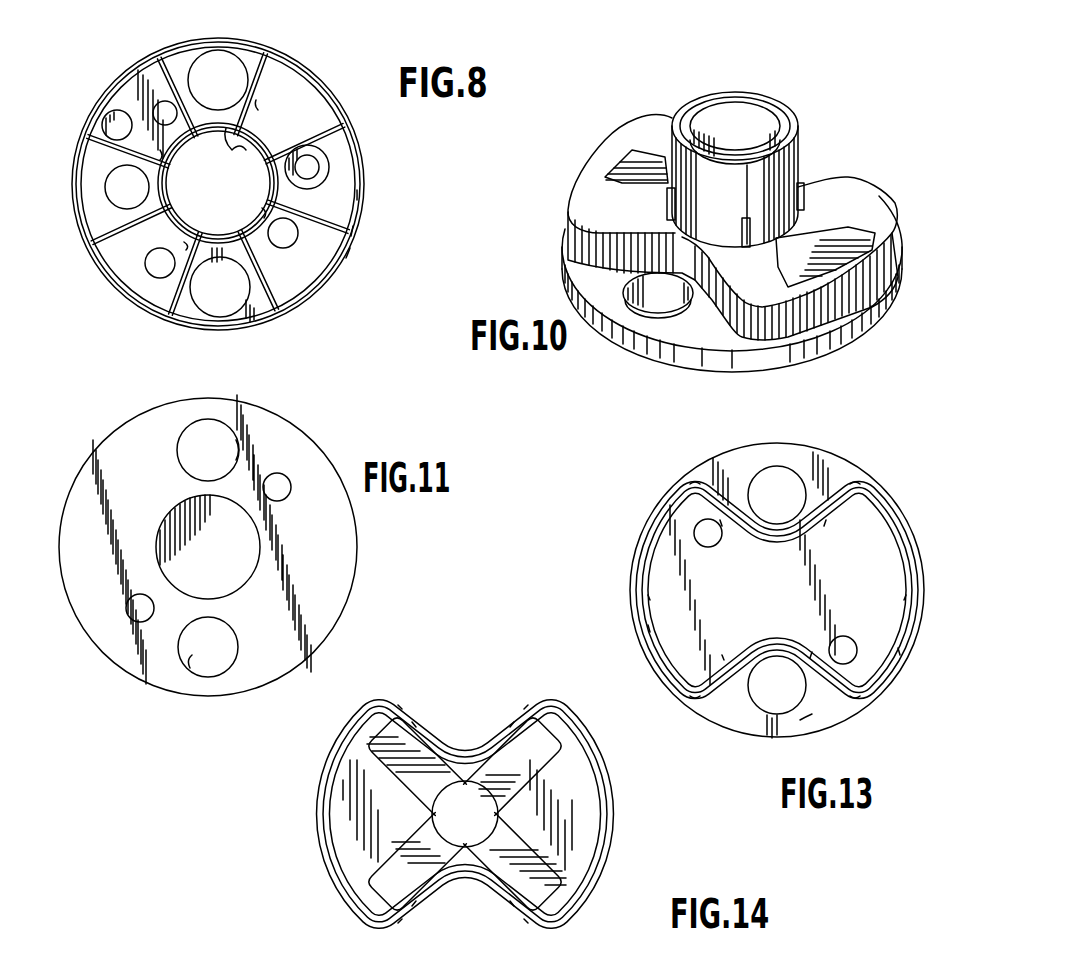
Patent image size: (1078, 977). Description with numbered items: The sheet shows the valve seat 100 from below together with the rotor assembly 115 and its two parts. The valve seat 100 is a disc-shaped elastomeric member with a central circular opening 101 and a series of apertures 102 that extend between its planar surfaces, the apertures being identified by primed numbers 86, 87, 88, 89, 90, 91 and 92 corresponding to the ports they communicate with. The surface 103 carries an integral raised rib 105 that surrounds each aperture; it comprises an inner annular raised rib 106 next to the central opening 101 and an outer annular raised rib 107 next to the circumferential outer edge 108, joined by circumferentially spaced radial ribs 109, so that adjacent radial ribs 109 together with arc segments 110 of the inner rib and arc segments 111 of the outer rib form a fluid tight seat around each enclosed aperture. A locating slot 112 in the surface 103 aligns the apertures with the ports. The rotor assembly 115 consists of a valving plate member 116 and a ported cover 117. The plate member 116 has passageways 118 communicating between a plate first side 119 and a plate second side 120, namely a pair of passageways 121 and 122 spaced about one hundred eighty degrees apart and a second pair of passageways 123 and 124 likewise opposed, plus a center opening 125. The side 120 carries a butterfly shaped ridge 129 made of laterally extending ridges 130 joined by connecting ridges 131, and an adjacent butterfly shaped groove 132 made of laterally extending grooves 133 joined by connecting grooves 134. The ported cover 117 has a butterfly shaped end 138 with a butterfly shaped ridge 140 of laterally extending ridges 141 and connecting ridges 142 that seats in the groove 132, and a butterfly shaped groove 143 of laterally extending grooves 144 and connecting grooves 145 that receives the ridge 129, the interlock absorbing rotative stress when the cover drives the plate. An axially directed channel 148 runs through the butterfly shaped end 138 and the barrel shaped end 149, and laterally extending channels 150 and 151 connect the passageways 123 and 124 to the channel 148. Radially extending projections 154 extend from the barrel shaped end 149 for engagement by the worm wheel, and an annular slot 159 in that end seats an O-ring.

In FIG. 8, the valve seat 100 is at (334, 86).
In FIG. 8, the central circular opening 101 is at (207, 195).
In FIG. 8, the apertures 102 is at (213, 52).
In FIG. 8, the substantially planar surface 103 is at (356, 196).
In FIG. 8, the raised rib 105 is at (362, 156).
In FIG. 8, the inner annular raised rib 106 is at (243, 218).
In FIG. 8, the outer annular raised rib 107 is at (355, 230).
In FIG. 8, the circumferential outer edge 108 is at (350, 254).
In FIG. 8, the radial ribs 109 is at (255, 105).
In FIG. 8, the circumferential arc segments of inner annular rib 110 is at (241, 153).
In FIG. 8, the circumferential arc segments of outer annular rib 111 is at (268, 42).
In FIG. 8, the locating slot 112 is at (110, 122).
In FIG. 8, the aperture (primed, corresponding to port) 86 is at (128, 206).
In FIG. 8, the aperture (primed, corresponding to port) 87 is at (278, 246).
In FIG. 8, the aperture (primed, corresponding to port) 88 is at (150, 262).
In FIG. 8, the aperture (primed, corresponding to port) 89 is at (223, 297).
In FIG. 8, the aperture (primed, corresponding to port) 90 is at (221, 90).
In FIG. 8, the aperture (primed, corresponding to port) 91 is at (163, 100).
In FIG. 8, the aperture (primed, corresponding to port) 92 is at (310, 166).
In FIG. 10, the rotor assembly 115 is at (862, 144).
In FIG. 10, the valving plate member 116 is at (818, 343).
In FIG. 11, the valving plate member 116 is at (360, 571).
In FIG. 13, the valving plate member 116 is at (832, 450).
In FIG. 10, the ported cover 117 is at (848, 205).
In FIG. 14, the ported cover 117 is at (620, 811).
In FIG. 11, the passageways 118 is at (225, 450).
In FIG. 11, the plate first side 119 is at (320, 626).
In FIG. 13, the plate second side 120 is at (805, 725).
In FIG. 10, the passageway 121 is at (672, 303).
In FIG. 11, the passageway 121 is at (183, 457).
In FIG. 13, the passageway 121 is at (775, 712).
In FIG. 11, the passageway 122 is at (232, 652).
In FIG. 13, the passageway 122 is at (778, 470).
In FIG. 11, the passageway 123 is at (130, 600).
In FIG. 13, the passageway 123 is at (852, 648).
In FIG. 11, the passageway 124 is at (283, 498).
In FIG. 13, the passageway 124 is at (718, 540).
In FIG. 11, the center opening 125 is at (230, 572).
In FIG. 13, the center opening 125 is at (902, 513).
In FIG. 13, the butterfly shaped ridge 129 is at (905, 540).
In FIG. 13, the laterally extending ridges 130 is at (825, 522).
In FIG. 13, the connecting ridges 131 is at (770, 622).
In FIG. 13, the butterfly shaped groove 132 is at (912, 560).
In FIG. 13, the laterally extending grooves 133 is at (698, 497).
In FIG. 13, the connecting grooves 134 is at (780, 540).
In FIG. 10, the butterfly shaped end 138 is at (860, 290).
In FIG. 14, the butterfly shaped end 138 is at (336, 777).
In FIG. 14, the butterfly shaped ridge 140 is at (578, 720).
In FIG. 14, the laterally extending ridges 141 is at (500, 708).
In FIG. 14, the connecting ridges 142 is at (465, 748).
In FIG. 14, the butterfly shaped groove 143 is at (593, 868).
In FIG. 14, the laterally extending grooves 144 is at (518, 705).
In FIG. 14, the connecting grooves 145 is at (438, 784).
In FIG. 10, the axially directed channel 148 is at (748, 105).
In FIG. 14, the axially directed channel 148 is at (470, 813).
In FIG. 10, the barrel shaped end 149 is at (775, 170).
In FIG. 14, the laterally extending channel 150 is at (370, 881).
In FIG. 14, the laterally extending channel 151 is at (540, 757).
In FIG. 10, the radially extending projections 154 is at (665, 208).
In FIG. 10, the annular slot 159 is at (680, 116).